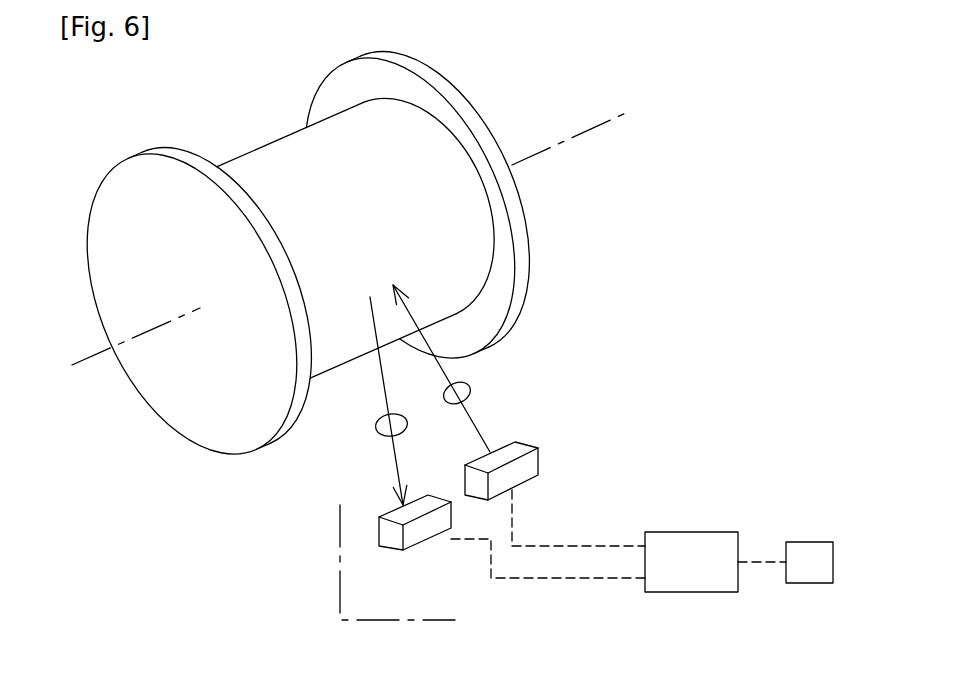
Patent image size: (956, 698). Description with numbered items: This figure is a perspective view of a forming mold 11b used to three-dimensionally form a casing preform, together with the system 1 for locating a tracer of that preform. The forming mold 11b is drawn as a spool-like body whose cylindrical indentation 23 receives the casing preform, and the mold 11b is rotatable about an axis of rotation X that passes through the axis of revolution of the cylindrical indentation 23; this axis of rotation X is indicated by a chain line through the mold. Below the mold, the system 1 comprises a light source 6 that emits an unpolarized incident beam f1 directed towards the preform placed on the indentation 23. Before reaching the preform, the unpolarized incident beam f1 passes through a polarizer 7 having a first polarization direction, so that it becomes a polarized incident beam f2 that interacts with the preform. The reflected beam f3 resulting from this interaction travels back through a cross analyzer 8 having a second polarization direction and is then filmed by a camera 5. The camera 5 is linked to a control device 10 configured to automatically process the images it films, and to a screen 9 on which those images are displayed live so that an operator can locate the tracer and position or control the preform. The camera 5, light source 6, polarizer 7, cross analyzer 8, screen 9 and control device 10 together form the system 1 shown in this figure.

The system 1 is at (325, 589).
The camera 5 is at (392, 540).
The light source 6 is at (530, 465).
The polarizer 7 is at (467, 395).
The cross analyzer 8 is at (376, 426).
The screen 9 is at (812, 548).
The control device 10 is at (704, 548).
The forming mold 11b is at (545, 283).
The cylindrical indentation 23 is at (266, 136).
The axis of rotation X is at (545, 152).
The unpolarized incident beam f1 is at (474, 420).
The polarized incident beam f2 is at (438, 365).
The reflected beam f3 is at (397, 468).